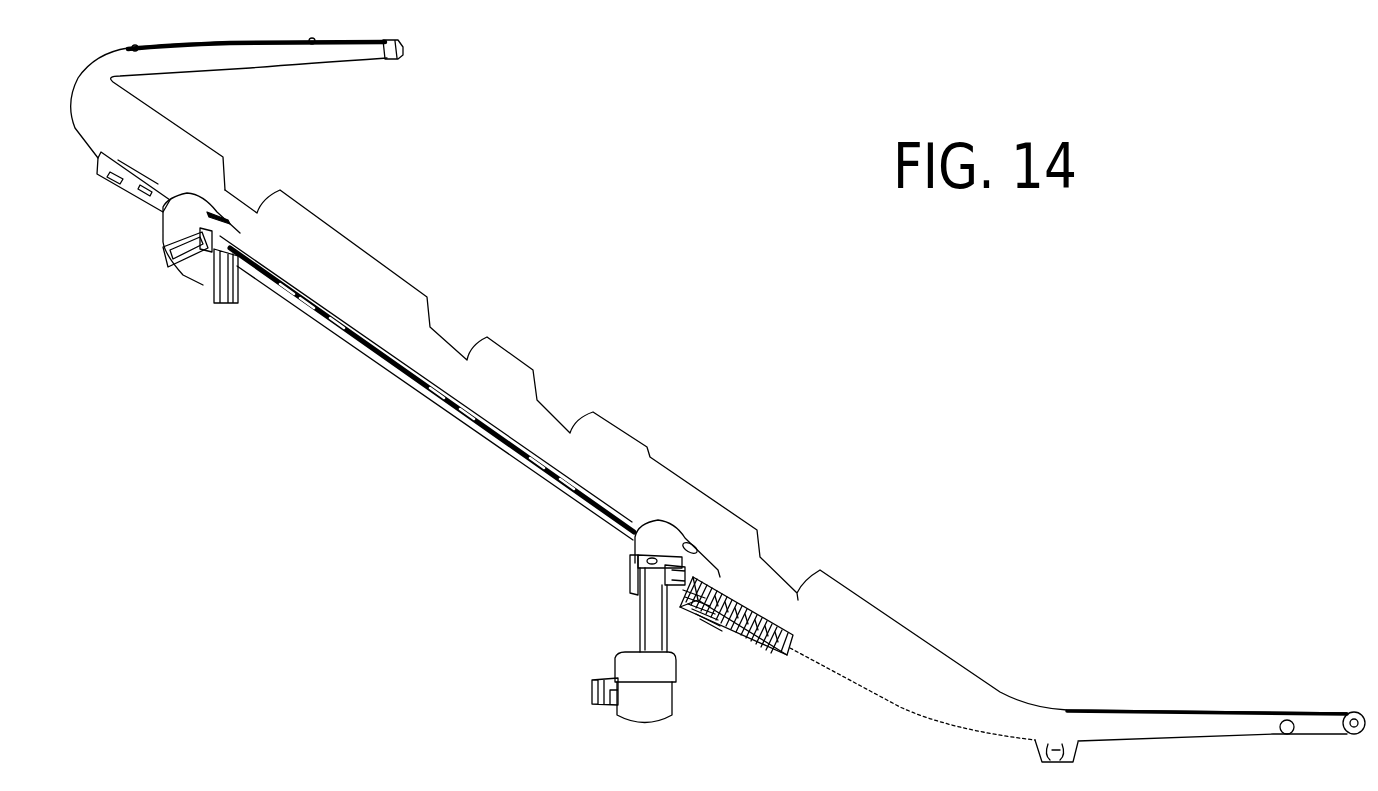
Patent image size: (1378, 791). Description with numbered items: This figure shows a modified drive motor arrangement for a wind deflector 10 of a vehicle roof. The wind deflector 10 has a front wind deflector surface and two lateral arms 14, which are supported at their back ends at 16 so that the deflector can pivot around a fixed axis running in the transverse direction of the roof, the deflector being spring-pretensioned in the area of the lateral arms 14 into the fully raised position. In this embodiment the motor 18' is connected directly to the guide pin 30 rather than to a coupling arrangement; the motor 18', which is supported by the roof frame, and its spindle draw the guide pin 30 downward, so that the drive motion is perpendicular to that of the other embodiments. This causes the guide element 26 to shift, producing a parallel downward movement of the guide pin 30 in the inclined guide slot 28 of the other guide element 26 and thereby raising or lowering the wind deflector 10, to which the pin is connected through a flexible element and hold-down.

The wind deflector 10 is at (673, 462).
The lateral arm 14 is at (247, 70).
The pivot support 16 is at (400, 67).
The motor 18' is at (671, 641).
The guide element 26 is at (203, 285).
The inclined guide slot 28 is at (160, 243).
The guide pin 30 is at (240, 234).